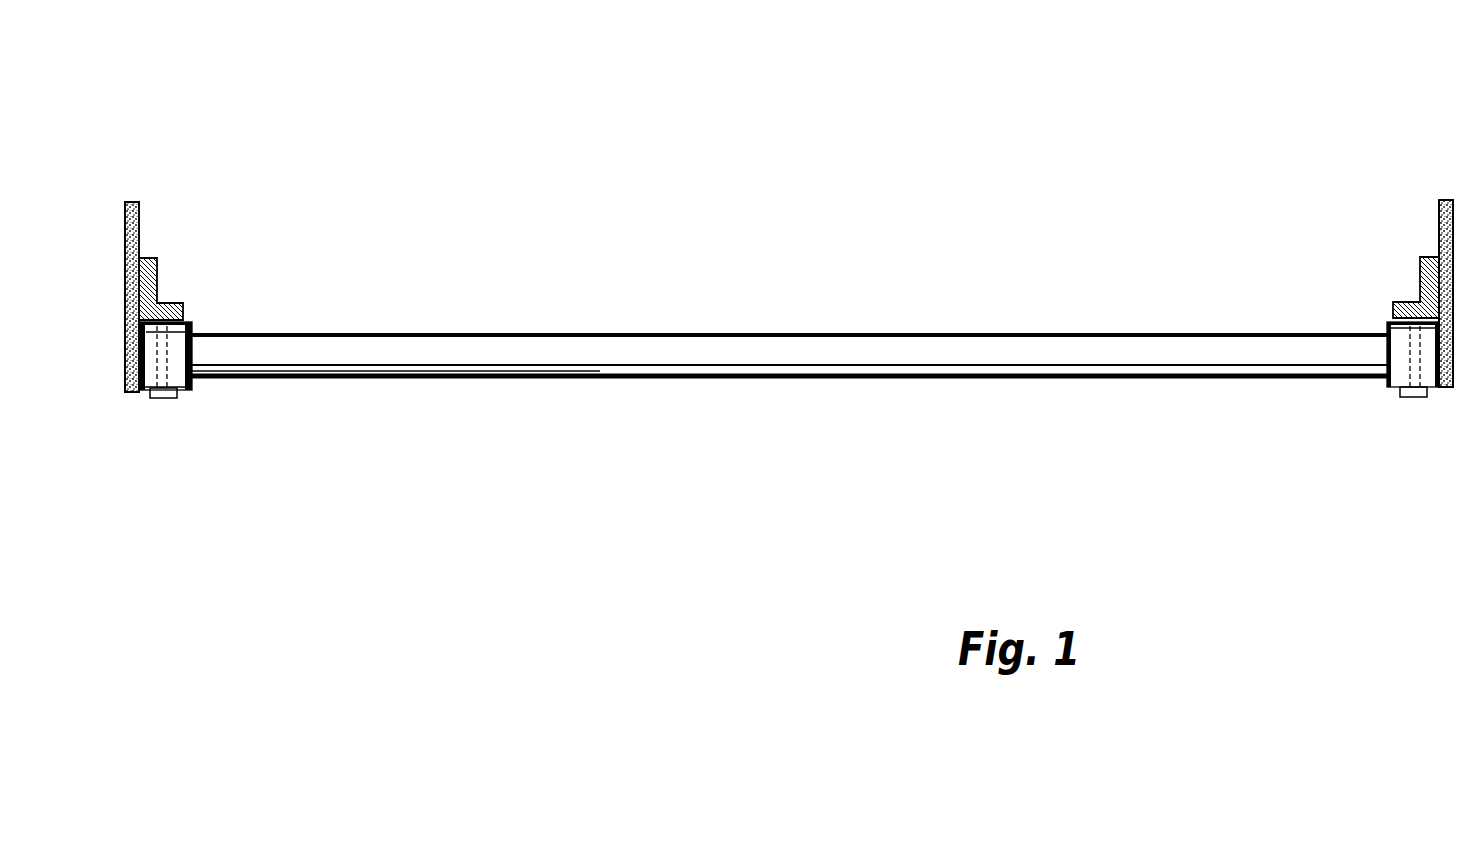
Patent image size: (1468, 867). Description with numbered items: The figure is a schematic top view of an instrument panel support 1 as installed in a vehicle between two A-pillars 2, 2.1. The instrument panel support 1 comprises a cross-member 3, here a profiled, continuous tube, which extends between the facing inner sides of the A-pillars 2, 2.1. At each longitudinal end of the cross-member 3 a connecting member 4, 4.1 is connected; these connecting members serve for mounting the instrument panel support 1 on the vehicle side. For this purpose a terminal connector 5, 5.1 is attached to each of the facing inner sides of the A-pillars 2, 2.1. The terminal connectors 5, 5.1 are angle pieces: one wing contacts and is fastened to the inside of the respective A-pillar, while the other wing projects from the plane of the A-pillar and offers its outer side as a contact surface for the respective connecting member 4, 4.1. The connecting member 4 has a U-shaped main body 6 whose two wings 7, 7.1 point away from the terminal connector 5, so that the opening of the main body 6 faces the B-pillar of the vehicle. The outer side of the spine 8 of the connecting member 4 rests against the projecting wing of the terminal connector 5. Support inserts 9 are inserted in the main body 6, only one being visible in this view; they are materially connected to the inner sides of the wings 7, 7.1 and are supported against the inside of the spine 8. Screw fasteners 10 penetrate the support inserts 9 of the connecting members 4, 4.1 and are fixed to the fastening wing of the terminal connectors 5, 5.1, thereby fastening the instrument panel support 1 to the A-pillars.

The instrument panel support 1 is at (825, 295).
The A-pillar 2 is at (141, 223).
The A-pillar 2.1 is at (1436, 236).
The cross-member 3 is at (896, 332).
The connecting member 4 is at (200, 402).
The connecting member 4.1 is at (1395, 400).
The terminal connector 5 is at (160, 283).
The terminal connector 5.1 is at (1416, 285).
The main body 6 is at (200, 367).
The wing 7 is at (142, 394).
The wing 7.1 is at (190, 394).
The spine 8 is at (151, 317).
The support insert 9 is at (162, 360).
The screw fastener 10 is at (163, 400).